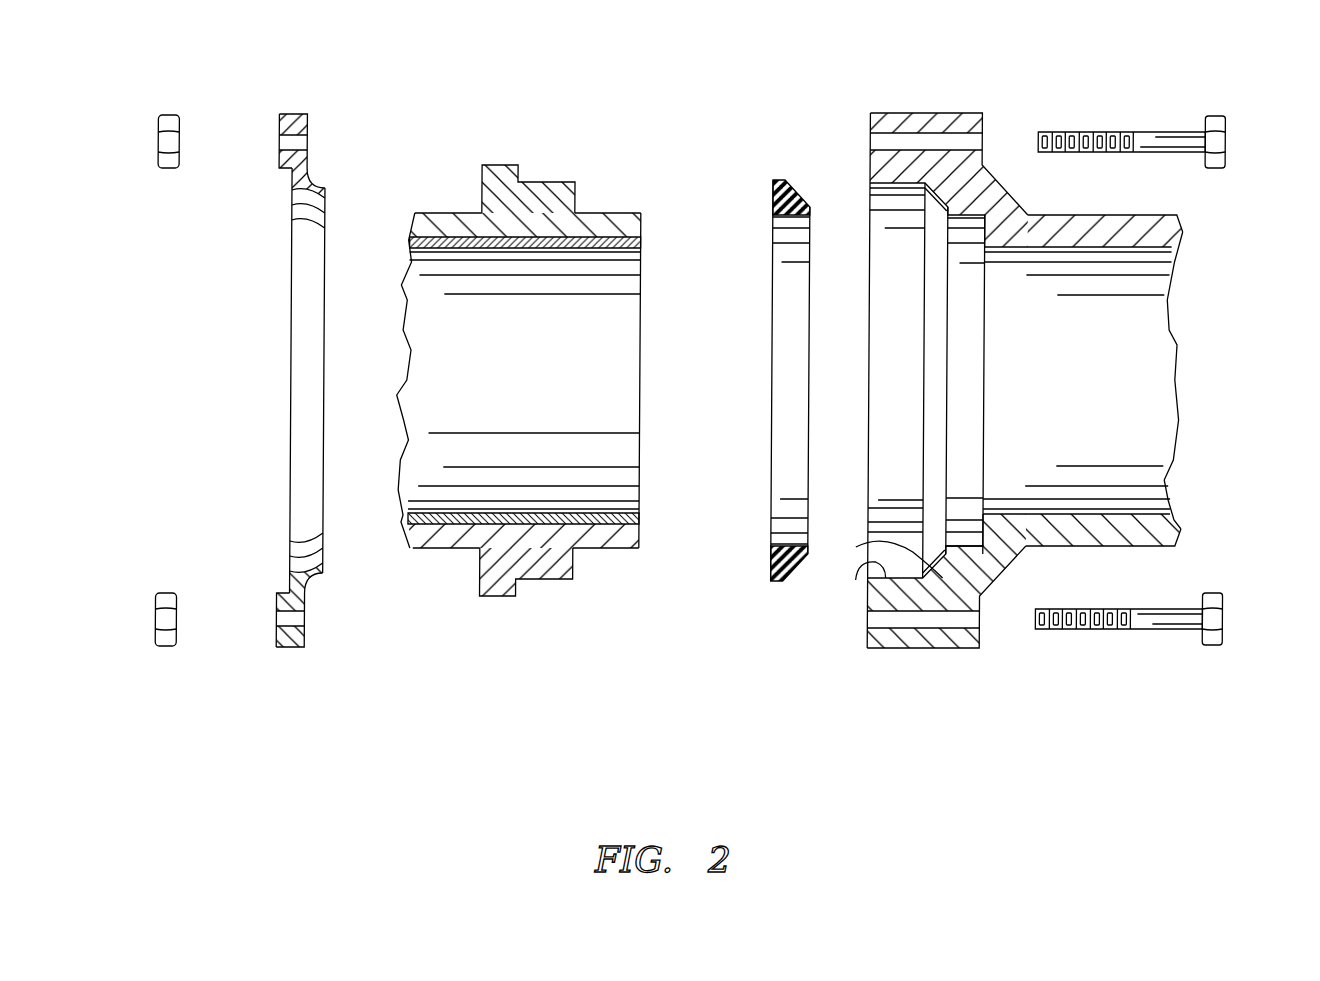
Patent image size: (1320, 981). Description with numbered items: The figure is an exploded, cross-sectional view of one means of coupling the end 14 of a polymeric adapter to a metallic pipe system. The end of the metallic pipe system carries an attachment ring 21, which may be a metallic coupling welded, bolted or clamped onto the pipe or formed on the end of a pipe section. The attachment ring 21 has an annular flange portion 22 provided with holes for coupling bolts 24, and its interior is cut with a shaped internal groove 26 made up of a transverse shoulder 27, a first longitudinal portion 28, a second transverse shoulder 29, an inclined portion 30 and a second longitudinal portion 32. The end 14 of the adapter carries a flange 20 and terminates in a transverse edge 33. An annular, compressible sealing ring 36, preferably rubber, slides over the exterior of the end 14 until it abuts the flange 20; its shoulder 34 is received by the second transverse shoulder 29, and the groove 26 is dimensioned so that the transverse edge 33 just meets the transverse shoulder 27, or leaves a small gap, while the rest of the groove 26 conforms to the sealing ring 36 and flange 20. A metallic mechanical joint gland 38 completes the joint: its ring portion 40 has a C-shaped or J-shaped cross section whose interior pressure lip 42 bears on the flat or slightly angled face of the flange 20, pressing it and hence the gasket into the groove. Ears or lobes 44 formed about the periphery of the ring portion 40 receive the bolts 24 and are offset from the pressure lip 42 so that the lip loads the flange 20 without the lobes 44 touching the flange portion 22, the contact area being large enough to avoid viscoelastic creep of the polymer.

The end of the adapter 14 is at (554, 407).
The flange 20 is at (490, 597).
The attachment ring 21 is at (992, 177).
The annular flange portion 22 is at (868, 167).
The coupling bolts 24 is at (1168, 132).
The internal groove 26 is at (898, 412).
The transverse shoulder 27 is at (982, 228).
The first longitudinal portion 28 is at (960, 545).
The second transverse shoulder 29 is at (947, 547).
The inclined portion 30 is at (858, 547).
The second longitudinal portion 32 is at (858, 580).
The transverse edge 33 is at (642, 218).
The shoulder 34 is at (807, 550).
The sealing ring 36 is at (742, 410).
The mechanical joint gland 38 is at (303, 345).
The ring portion 40 is at (288, 173).
The pressure lip 42 is at (327, 192).
The ears or lobes 44 is at (280, 122).